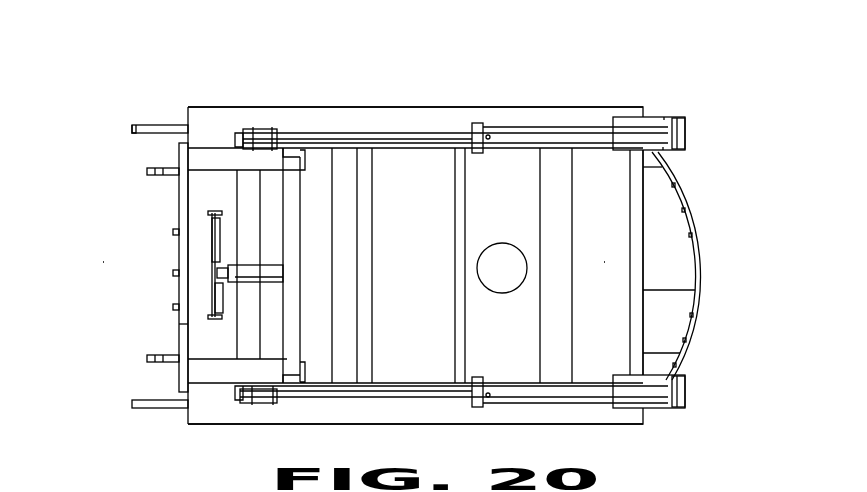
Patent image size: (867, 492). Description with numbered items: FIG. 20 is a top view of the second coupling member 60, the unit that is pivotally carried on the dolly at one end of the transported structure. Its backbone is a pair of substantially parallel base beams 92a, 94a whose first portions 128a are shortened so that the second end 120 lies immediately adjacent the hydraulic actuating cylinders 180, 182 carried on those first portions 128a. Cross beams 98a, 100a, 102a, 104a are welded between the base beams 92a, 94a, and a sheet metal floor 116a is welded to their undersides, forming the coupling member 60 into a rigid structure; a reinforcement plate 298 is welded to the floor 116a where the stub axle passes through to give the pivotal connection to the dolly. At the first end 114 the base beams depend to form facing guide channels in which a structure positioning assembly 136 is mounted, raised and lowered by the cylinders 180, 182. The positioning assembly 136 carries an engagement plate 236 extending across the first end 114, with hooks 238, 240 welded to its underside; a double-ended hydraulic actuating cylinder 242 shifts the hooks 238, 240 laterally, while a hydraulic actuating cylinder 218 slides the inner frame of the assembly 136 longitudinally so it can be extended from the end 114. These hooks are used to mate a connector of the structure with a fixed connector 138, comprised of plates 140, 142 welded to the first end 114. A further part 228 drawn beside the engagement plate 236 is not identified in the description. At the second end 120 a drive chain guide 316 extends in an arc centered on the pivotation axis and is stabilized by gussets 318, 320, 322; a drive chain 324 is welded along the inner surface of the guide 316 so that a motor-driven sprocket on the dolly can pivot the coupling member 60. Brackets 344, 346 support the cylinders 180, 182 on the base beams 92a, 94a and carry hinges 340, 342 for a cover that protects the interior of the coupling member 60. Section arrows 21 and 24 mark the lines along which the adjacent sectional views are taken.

The second coupling member 60 is at (605, 58).
The first end 114 is at (188, 113).
The base beam 94a is at (368, 106).
The base beam 92a is at (417, 428).
The first portion 128a is at (383, 122).
The hydraulic actuating cylinder 182 is at (515, 130).
The hydraulic actuating cylinder 180 is at (532, 393).
The cross beam 100a is at (458, 152).
The cross beam 98a is at (362, 187).
The cross beam 102a is at (545, 165).
The sheet metal floor 116a is at (392, 275).
The cross beam 104a is at (635, 193).
The second end 120 is at (650, 223).
The reinforcement plate 298 is at (505, 246).
The bracket 346 is at (628, 122).
The hinge 342 is at (685, 133).
The bracket 344 is at (635, 408).
The hinge 340 is at (685, 395).
The drive chain guide 316 is at (697, 305).
The drive chain 324 is at (692, 325).
The gusset 322 is at (655, 160).
The gusset 320 is at (680, 262).
The gusset 318 is at (658, 362).
The plate 142 is at (160, 127).
The fixed connector 138 is at (128, 117).
The hook 240 is at (165, 168).
The hook 238 is at (168, 357).
The plate 140 is at (147, 404).
The engagement plate 236 is at (183, 290).
The fasteners 228 is at (172, 316).
The double-ended hydraulic actuating cylinder 242 is at (215, 232).
The hydraulic actuating cylinder 218 is at (245, 270).
The structure positioning assembly 136 is at (227, 354).
The section line 21 is at (122, 262).
The section line 24 is at (623, 262).